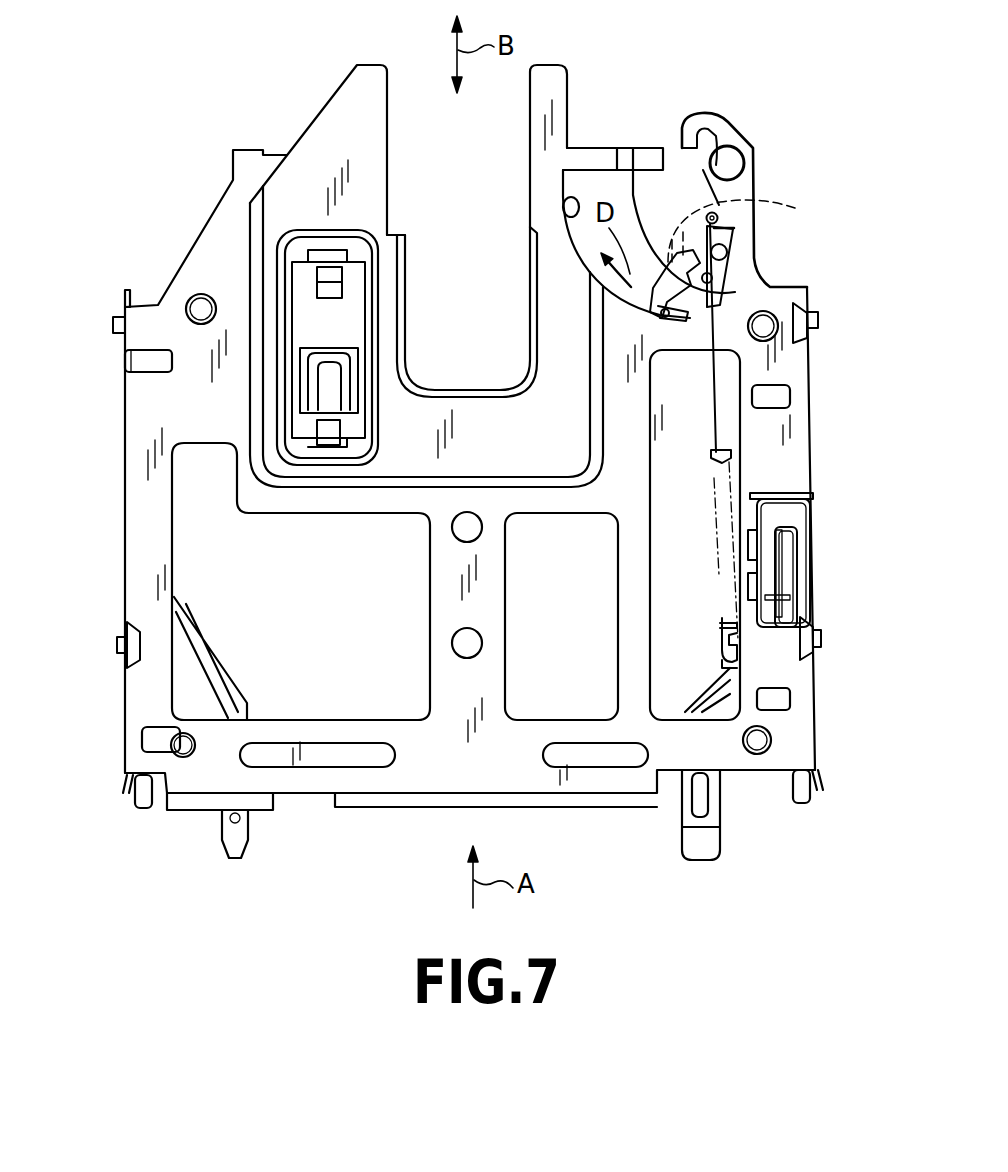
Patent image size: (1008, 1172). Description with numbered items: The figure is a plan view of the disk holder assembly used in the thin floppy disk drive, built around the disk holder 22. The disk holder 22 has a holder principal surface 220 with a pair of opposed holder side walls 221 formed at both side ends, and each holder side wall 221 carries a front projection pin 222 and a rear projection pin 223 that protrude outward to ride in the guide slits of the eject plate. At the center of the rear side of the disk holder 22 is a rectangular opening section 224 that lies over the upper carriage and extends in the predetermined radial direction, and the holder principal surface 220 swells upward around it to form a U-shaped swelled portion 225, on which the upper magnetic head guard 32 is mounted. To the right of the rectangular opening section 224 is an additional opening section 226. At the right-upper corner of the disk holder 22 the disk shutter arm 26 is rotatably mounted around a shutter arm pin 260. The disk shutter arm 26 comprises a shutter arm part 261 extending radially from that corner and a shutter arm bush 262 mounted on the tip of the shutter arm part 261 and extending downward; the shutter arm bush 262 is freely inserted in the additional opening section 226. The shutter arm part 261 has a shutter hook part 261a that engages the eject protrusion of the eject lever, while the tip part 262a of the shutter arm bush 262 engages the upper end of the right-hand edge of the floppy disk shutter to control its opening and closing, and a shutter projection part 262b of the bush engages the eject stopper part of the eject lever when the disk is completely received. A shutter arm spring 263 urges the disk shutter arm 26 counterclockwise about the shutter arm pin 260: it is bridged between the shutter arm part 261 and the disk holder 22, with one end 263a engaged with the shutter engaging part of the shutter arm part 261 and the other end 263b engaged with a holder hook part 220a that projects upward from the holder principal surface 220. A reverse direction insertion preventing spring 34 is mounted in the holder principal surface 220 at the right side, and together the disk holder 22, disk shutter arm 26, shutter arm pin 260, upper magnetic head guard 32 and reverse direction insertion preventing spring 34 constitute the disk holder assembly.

The disk holder 22 is at (133, 482).
The disk shutter arm 26 is at (752, 176).
The upper magnetic head guard 32 is at (307, 303).
The reverse direction insertion preventing spring 34 is at (797, 570).
The holder principal surface 220 is at (408, 773).
The holder hook part 220a is at (733, 667).
The holder side walls 221 is at (123, 582).
The projection pin 222 is at (113, 325).
The projection pin 223 is at (117, 644).
The rectangular opening section 224 is at (517, 143).
The U-shaped swelled portion 225 is at (333, 130).
The additional opening section 226 is at (567, 220).
The shutter arm pin 260 is at (733, 160).
The shutter arm part 261 is at (737, 240).
The shutter hook part 261a is at (683, 140).
The shutter arm bush 262 is at (655, 262).
The tip part 262a is at (687, 318).
The shutter projection part 262b is at (790, 207).
The shutter arm spring 263 is at (730, 472).
The end of shutter arm spring 263a is at (722, 222).
The another end of shutter arm spring 263b is at (732, 640).